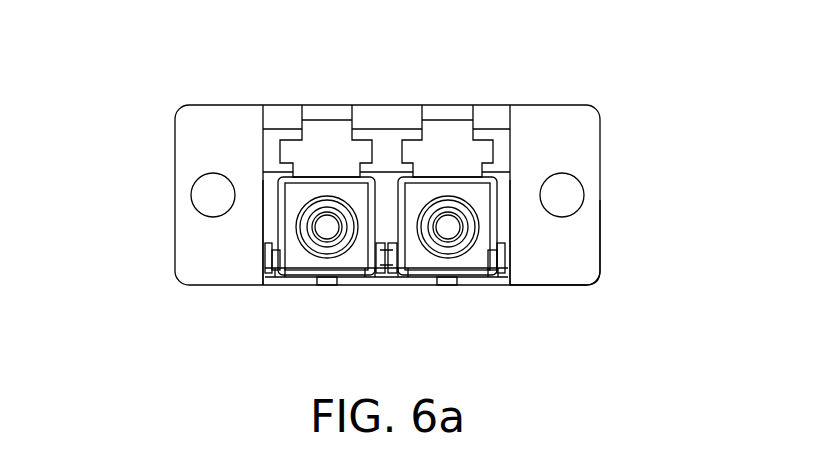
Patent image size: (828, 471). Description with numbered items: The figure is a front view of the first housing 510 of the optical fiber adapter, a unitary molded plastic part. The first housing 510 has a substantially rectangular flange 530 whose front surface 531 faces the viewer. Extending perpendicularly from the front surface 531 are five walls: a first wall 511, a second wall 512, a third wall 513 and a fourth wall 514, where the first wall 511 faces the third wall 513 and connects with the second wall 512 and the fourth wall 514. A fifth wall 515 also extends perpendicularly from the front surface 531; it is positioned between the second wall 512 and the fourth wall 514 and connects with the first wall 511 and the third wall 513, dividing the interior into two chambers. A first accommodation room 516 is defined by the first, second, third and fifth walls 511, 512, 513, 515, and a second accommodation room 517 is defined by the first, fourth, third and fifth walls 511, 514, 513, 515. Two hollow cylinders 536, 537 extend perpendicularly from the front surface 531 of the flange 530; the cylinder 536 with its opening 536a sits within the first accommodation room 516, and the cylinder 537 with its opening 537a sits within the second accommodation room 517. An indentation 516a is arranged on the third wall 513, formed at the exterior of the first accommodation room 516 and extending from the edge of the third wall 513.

The first housing 510 is at (104, 99).
The first wall 511 is at (388, 113).
The second wall 512 is at (270, 183).
The third wall 513 is at (403, 282).
The fourth wall 514 is at (505, 197).
The fifth wall 515 is at (388, 220).
The first accommodation room 516 is at (325, 155).
The indentation 516a is at (330, 285).
The second accommodation room 517 is at (448, 150).
The flange 530 is at (600, 160).
The front surface 531 is at (585, 260).
The hollow cylinder 536 is at (297, 238).
The opening 536a is at (323, 228).
The hollow cylinder 537 is at (450, 228).
The opening 537a is at (458, 233).